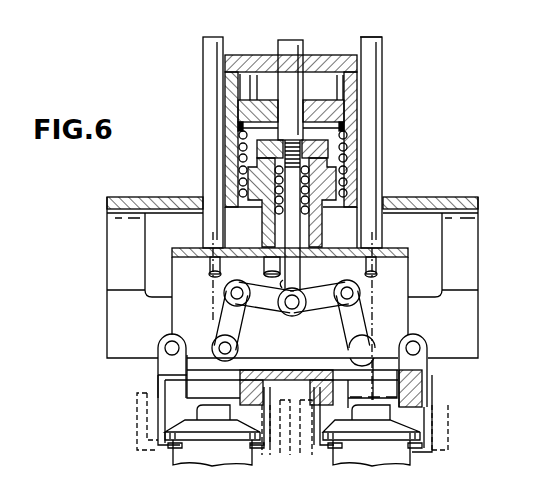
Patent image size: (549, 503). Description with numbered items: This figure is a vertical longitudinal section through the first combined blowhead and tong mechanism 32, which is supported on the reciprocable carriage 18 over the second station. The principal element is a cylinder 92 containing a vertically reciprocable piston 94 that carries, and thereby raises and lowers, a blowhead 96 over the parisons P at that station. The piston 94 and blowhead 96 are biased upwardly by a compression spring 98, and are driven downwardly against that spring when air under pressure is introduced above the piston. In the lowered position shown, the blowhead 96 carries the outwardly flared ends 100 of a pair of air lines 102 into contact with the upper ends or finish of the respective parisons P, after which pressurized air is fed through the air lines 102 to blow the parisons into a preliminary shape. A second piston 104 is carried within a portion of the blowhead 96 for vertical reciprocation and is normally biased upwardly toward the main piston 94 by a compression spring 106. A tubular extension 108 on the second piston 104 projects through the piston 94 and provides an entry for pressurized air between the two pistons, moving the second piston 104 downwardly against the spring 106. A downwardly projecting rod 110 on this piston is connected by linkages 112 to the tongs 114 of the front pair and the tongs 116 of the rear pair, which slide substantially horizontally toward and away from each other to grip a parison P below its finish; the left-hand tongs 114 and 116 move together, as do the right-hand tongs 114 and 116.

The carriage 18 is at (421, 197).
The combined blowhead and tong mechanism 32 is at (391, 63).
The cylinder 92 is at (360, 90).
The piston 94 is at (323, 100).
The blowhead 96 is at (400, 224).
The compression spring 98 is at (347, 133).
The outwardly flared ends 100 is at (200, 428).
The air lines 102 is at (205, 152).
The second piston 104 is at (255, 136).
The compression spring 106 is at (273, 208).
The tubular extension 108 is at (288, 45).
The rod 110 is at (293, 328).
The linkages 112 is at (302, 352).
The tongs 114 is at (158, 422).
The tongs 116 is at (462, 413).
The parison P is at (209, 452).